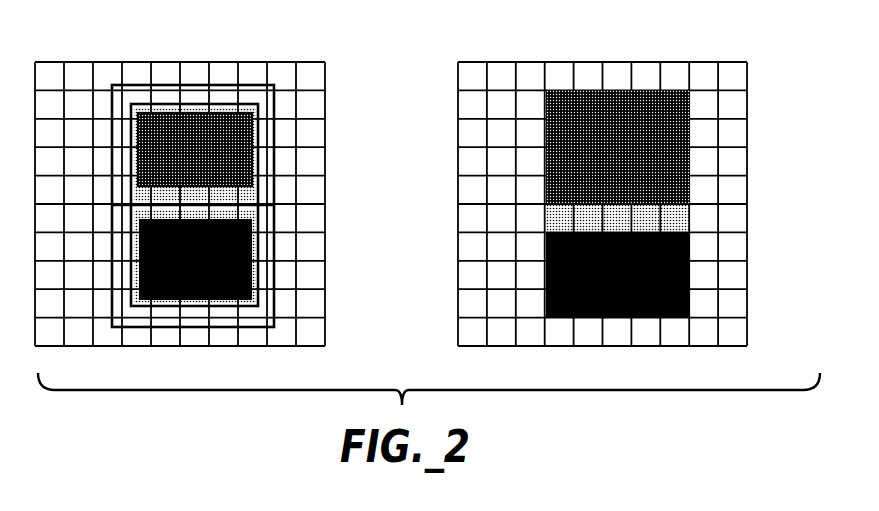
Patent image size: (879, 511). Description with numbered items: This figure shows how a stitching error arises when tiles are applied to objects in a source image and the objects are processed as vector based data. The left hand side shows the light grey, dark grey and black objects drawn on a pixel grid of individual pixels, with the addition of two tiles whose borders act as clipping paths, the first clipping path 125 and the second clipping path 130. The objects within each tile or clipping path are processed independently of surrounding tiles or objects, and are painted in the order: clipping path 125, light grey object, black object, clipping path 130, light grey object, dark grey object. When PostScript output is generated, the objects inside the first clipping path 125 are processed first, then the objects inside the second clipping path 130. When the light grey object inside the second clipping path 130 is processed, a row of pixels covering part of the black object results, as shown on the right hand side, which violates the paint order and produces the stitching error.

The first clipping path 125 is at (278, 245).
The second clipping path 130 is at (275, 153).